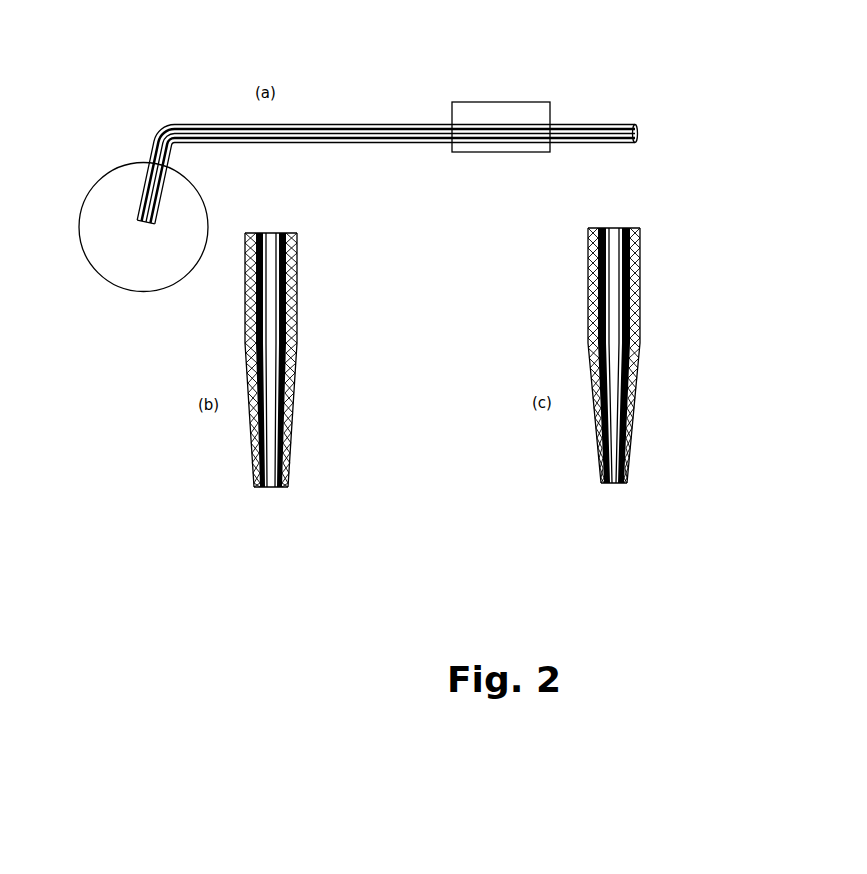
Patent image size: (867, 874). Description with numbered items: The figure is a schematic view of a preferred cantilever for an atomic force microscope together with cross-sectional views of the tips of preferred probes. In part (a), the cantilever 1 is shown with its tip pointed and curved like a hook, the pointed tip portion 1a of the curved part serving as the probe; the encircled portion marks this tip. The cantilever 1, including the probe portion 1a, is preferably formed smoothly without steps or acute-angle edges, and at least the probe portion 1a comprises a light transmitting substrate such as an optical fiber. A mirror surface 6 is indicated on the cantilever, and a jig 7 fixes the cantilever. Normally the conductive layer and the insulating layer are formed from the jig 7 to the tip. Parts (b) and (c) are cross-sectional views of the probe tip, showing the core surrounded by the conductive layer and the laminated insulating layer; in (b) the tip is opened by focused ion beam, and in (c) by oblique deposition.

The cantilever 1 is at (350, 125).
The probe portion 1a is at (160, 190).
The mirror surface 6 is at (191, 118).
The jig 7 is at (477, 112).